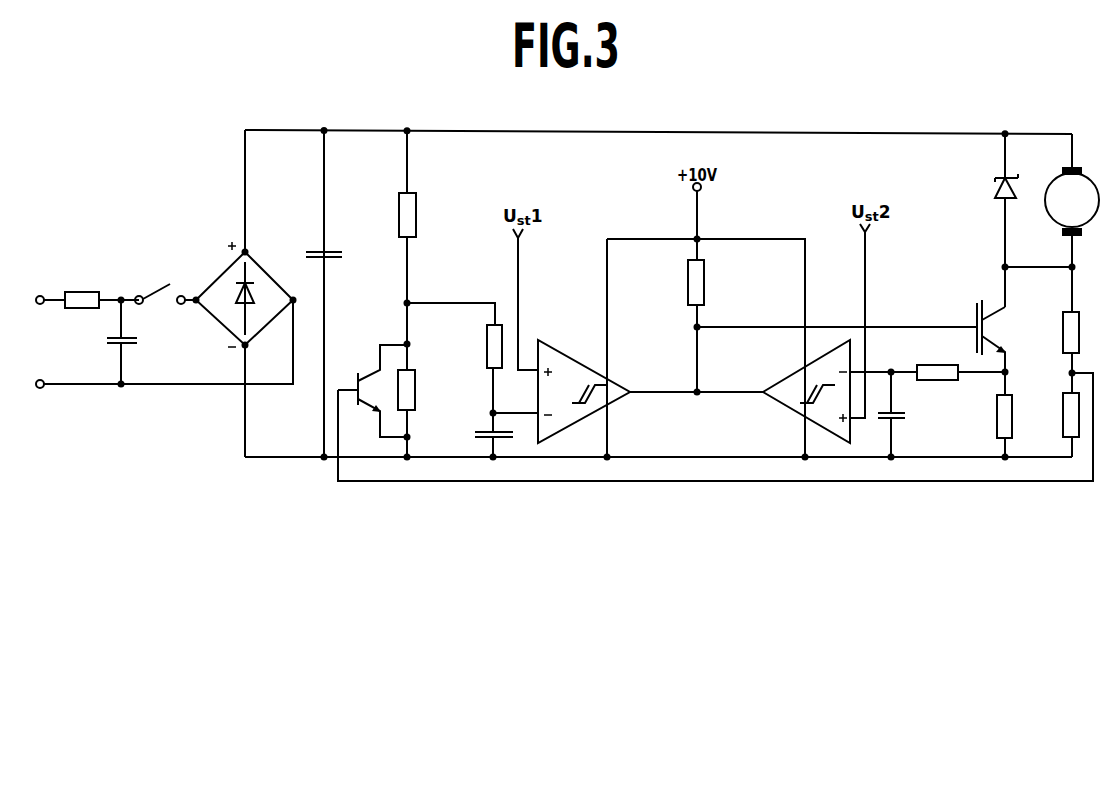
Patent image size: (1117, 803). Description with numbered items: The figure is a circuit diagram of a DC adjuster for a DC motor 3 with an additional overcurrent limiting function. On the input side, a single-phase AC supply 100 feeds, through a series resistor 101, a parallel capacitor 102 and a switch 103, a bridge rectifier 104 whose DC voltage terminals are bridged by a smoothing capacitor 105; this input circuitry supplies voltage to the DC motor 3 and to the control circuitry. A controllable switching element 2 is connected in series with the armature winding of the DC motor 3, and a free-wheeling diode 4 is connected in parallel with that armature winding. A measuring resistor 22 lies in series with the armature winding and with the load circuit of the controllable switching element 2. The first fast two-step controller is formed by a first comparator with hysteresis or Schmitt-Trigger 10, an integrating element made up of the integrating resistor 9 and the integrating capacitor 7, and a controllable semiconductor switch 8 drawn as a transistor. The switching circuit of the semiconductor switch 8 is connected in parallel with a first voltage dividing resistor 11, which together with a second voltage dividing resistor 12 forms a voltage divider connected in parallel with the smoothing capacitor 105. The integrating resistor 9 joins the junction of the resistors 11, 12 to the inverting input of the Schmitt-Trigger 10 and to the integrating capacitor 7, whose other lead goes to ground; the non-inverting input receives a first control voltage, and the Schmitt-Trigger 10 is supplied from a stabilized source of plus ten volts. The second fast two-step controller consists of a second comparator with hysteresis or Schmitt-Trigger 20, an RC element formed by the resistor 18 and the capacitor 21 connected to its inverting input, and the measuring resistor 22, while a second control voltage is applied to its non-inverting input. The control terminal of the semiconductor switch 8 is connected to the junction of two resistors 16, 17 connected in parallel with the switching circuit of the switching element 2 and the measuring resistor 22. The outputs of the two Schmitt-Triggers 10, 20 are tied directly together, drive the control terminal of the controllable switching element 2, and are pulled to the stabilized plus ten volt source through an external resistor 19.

The single-phase AC supply 100 is at (39, 342).
The series resistor 101 is at (73, 301).
The parallel capacitor 102 is at (130, 345).
The switch 103 is at (161, 288).
The bridge rectifier 104 is at (222, 281).
The smoothing capacitor 105 is at (334, 251).
The second voltage dividing resistor 12 is at (410, 218).
The first voltage dividing resistor 11 is at (414, 396).
The controllable semiconductor switch 8 is at (372, 391).
The integrating resistor 9 is at (487, 346).
The integrating capacitor 7 is at (479, 433).
The first comparator with hysteresis or Schmitt-Trigger 10 is at (569, 416).
The external resistor 19 is at (704, 285).
The second comparator with hysteresis or Schmitt-Trigger 20 is at (796, 417).
The RC element resistor 18 is at (945, 370).
The RC element capacitor 21 is at (902, 419).
The measuring resistor 22 is at (997, 420).
The controllable switching element 2 is at (993, 330).
The free-wheeling diode 4 is at (995, 186).
The DC motor 3 is at (1090, 195).
The resistor 16 is at (1063, 338).
The resistor 17 is at (1063, 418).